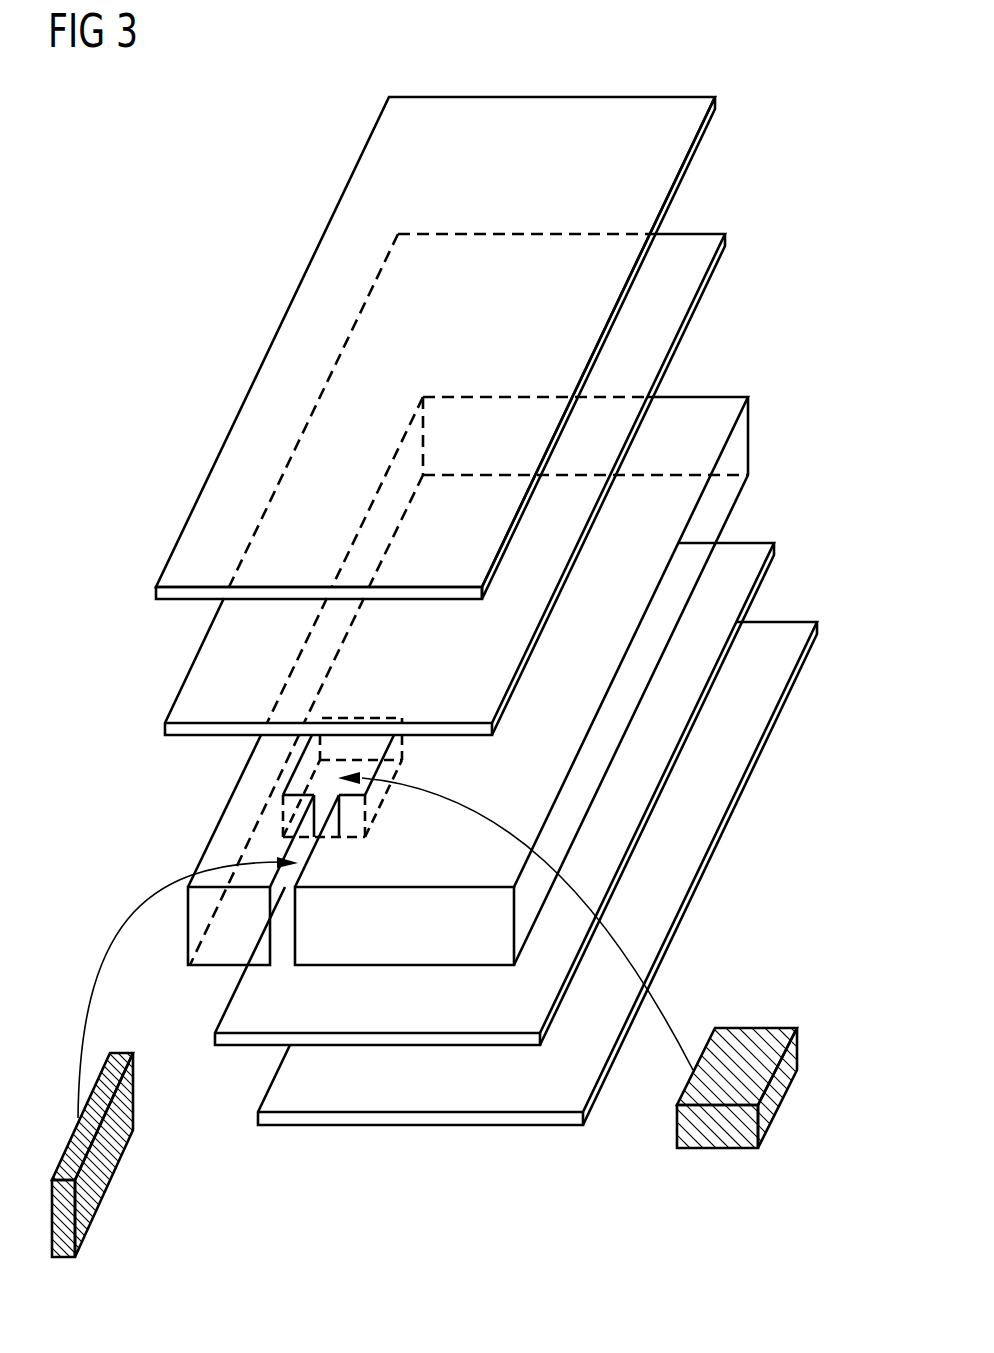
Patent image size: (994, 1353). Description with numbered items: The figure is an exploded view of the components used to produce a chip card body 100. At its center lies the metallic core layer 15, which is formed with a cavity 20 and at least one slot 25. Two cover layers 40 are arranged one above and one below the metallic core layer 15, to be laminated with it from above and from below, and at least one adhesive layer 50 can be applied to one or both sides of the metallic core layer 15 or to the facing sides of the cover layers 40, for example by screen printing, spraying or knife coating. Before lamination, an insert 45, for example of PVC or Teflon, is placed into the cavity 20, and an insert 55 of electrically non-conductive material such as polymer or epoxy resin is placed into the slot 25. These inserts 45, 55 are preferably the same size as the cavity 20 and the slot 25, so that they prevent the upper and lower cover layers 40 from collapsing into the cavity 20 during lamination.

The chip card body 100 is at (209, 137).
The cover layer 40 is at (553, 105).
The adhesive layer 50 is at (693, 242).
The metallic core layer 15 is at (701, 402).
The cavity 20 is at (305, 773).
The slot 25 is at (283, 958).
The insert 45 is at (756, 1035).
The insert 55 is at (108, 1170).